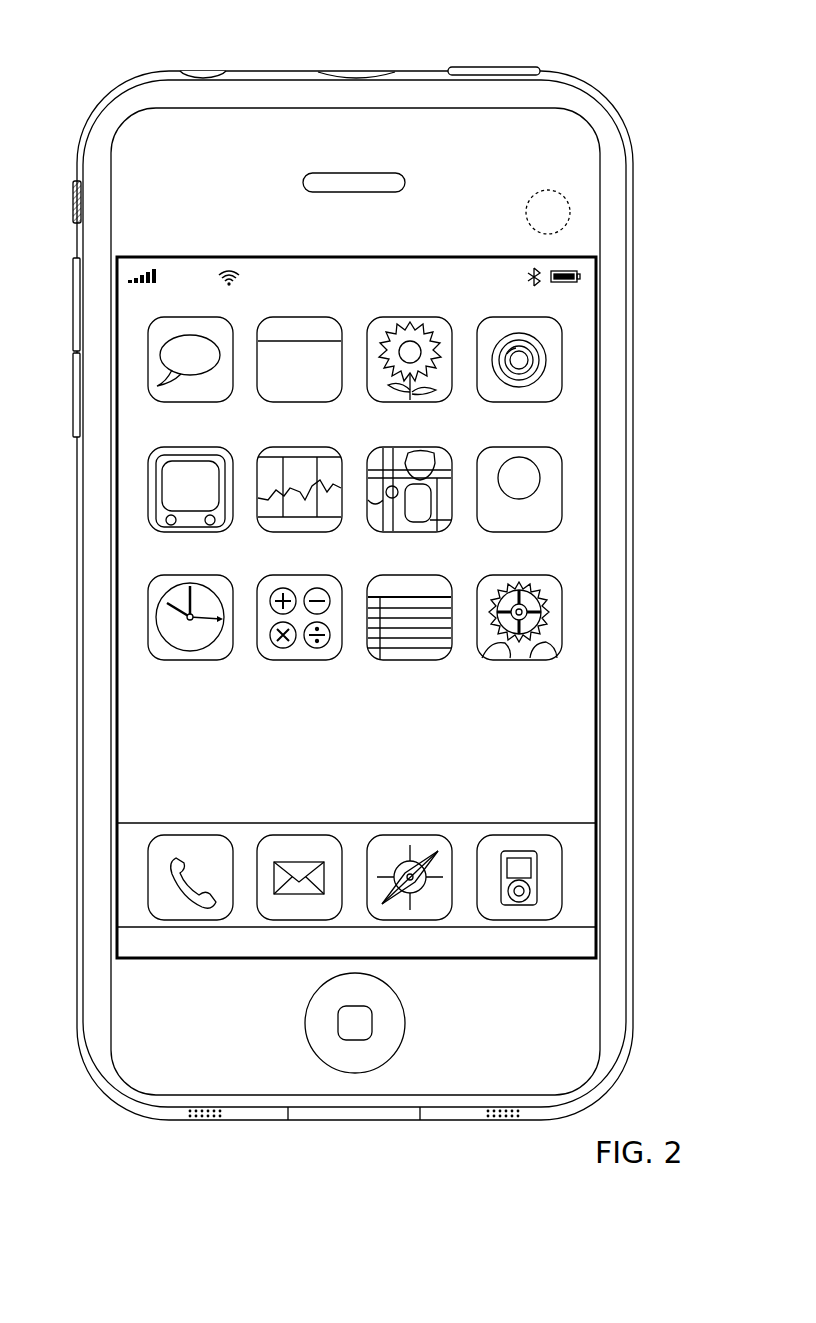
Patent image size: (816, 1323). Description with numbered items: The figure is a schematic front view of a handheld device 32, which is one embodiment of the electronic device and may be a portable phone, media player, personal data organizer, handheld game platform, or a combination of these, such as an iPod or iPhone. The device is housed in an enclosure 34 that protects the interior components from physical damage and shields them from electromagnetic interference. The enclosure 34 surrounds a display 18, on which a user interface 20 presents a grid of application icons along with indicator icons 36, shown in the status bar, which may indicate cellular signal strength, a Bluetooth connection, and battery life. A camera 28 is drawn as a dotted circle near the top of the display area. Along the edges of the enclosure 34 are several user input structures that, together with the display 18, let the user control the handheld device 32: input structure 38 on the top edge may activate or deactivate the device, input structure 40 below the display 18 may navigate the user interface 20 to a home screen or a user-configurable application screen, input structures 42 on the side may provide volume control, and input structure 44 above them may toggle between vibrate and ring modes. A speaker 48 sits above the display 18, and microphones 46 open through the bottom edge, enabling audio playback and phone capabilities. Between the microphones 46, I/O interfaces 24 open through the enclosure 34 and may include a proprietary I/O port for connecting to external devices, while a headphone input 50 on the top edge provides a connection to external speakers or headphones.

The handheld device 32 is at (168, 32).
The enclosure 34 is at (633, 250).
The headphone input 50 is at (200, 71).
The input structure 38 is at (524, 69).
The input structure 44 is at (74, 205).
The input structures 42 is at (74, 293).
The speaker 48 is at (375, 174).
The camera 28 is at (548, 190).
The display 18 is at (598, 580).
The user interface 20 is at (581, 396).
The indicator icons 36 is at (160, 268).
The input structure 40 is at (403, 1036).
The microphones 46 is at (199, 1126).
The I/O interfaces 24 is at (338, 1122).